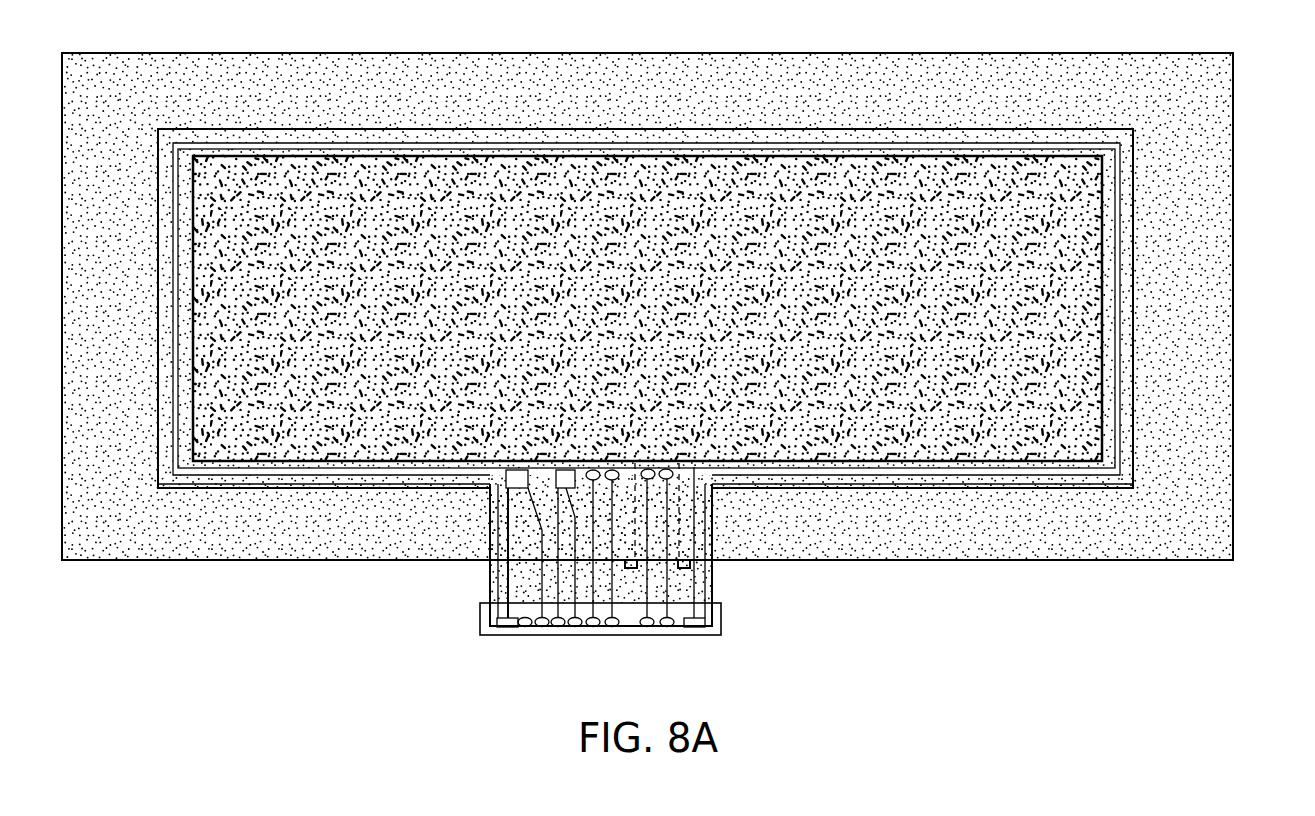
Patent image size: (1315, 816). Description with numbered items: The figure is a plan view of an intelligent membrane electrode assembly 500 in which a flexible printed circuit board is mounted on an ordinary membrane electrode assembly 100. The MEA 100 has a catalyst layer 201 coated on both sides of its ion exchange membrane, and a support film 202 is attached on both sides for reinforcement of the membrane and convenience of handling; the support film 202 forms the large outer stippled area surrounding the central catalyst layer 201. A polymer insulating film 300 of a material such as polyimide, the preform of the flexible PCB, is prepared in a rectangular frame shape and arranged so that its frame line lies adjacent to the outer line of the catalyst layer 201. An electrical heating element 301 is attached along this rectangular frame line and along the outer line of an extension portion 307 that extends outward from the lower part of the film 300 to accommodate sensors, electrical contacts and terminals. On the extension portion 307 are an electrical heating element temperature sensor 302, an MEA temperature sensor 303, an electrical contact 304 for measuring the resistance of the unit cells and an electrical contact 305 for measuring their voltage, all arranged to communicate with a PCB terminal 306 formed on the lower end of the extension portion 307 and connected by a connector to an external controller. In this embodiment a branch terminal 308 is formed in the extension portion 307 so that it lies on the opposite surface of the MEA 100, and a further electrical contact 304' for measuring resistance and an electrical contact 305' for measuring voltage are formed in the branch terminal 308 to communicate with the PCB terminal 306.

The display device assembly 500 is at (678, 23).
The membrane electrode assembly 100 is at (1237, 144).
The support film 202 is at (678, 108).
The catalyst layer 201 is at (678, 210).
The polymer insulating film 300 is at (1135, 207).
The electrical heating element 301 is at (1125, 248).
The electrical heating element temperature sensor 302 is at (507, 484).
The MEA temperature sensor 303 is at (564, 488).
The electrical contact for measuring resistance 304 is at (629, 577).
The electrical contact for measuring resistance 304' is at (675, 577).
The electrical contact for measuring voltage 305 is at (581, 577).
The electrical contact for measuring voltage 305' is at (757, 543).
The PCB terminal 306 is at (480, 621).
The extension portion 307 is at (713, 592).
The branch terminal 308 is at (677, 532).